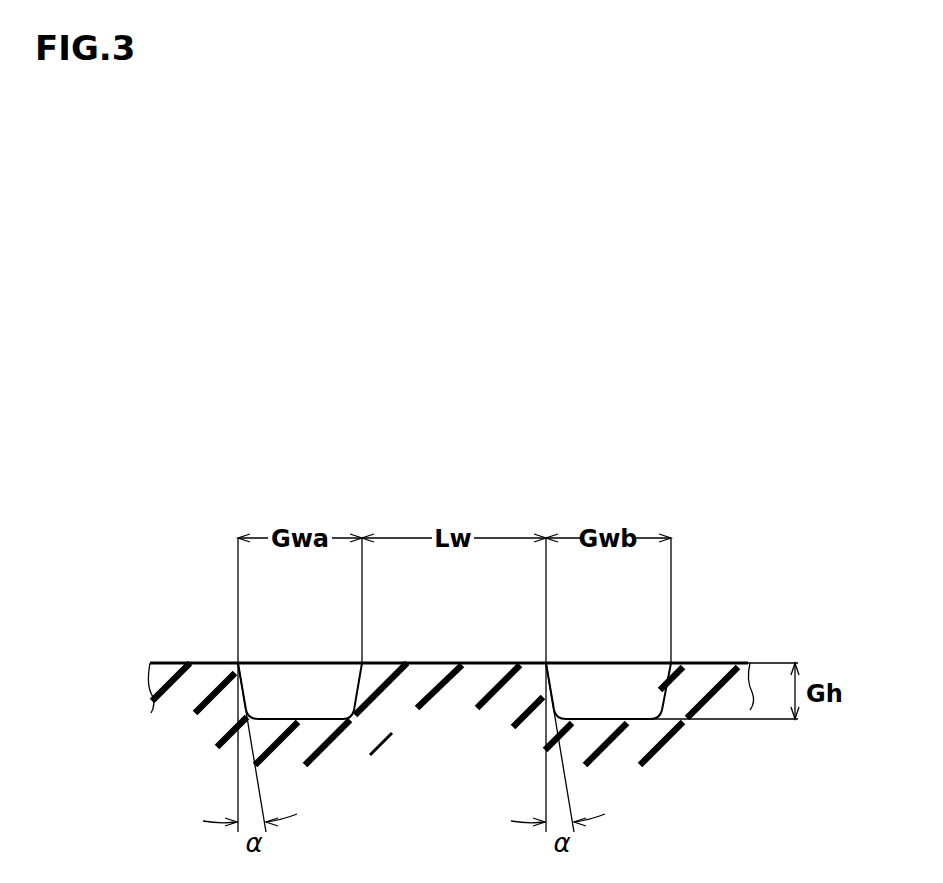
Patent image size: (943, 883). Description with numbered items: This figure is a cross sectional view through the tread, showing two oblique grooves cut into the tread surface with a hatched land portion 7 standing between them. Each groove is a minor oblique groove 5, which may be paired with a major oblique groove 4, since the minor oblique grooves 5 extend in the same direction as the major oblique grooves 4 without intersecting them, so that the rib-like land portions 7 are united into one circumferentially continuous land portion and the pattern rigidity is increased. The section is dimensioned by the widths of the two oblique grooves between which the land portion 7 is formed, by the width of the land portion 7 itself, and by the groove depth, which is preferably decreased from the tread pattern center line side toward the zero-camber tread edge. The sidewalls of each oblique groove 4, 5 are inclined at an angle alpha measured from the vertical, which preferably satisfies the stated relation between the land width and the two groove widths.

The major oblique groove 4 is at (454, 651).
The minor oblique groove 5 is at (287, 678).
The land portion 7 is at (437, 675).